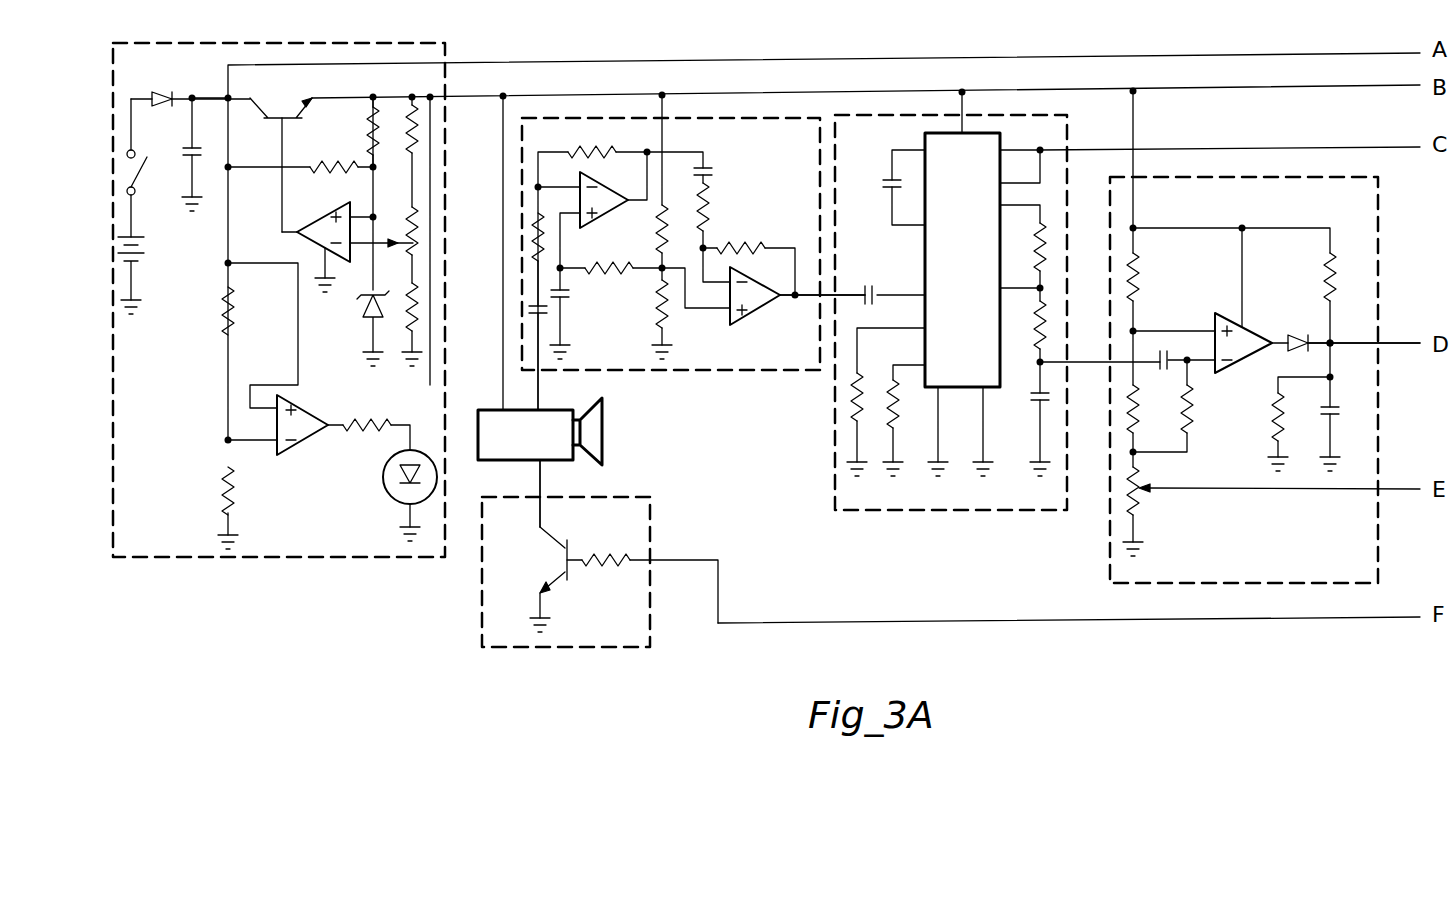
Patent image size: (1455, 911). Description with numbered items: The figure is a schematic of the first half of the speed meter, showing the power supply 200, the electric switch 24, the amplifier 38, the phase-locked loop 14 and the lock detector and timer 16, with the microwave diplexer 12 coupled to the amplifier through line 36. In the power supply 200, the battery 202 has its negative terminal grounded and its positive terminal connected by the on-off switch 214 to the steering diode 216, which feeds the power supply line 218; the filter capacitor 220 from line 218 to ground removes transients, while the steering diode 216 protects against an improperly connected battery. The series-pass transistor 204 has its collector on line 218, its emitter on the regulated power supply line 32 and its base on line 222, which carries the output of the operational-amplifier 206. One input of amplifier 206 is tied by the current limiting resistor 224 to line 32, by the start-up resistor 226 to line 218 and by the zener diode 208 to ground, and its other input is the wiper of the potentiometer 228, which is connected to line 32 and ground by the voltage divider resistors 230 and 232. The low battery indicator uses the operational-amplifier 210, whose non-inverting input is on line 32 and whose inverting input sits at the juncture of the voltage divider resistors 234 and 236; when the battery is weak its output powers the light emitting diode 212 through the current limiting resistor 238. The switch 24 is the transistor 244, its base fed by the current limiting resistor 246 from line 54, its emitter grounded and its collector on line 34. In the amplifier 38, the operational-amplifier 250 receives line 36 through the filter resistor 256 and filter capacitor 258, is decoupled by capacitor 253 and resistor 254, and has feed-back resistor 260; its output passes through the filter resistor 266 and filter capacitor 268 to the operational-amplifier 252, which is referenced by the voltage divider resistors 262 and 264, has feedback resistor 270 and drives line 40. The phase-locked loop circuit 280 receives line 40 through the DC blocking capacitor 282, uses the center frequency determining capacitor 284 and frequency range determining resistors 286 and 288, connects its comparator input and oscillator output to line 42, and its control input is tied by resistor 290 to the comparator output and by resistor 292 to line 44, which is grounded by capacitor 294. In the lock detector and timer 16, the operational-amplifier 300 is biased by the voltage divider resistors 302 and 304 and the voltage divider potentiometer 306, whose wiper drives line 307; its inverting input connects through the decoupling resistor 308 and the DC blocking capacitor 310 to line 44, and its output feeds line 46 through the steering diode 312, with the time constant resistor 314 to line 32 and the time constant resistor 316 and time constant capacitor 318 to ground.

The microwave diplexer 12 is at (602, 428).
The phase-locked loop 14 is at (975, 510).
The lock detector and timer 16 is at (1109, 542).
The electric switch 24 is at (652, 592).
The power supply line 32 is at (538, 96).
The line 34 is at (538, 477).
The line 36 is at (542, 387).
The amplifier 38 is at (640, 370).
The line 40 is at (795, 300).
The line 42 is at (1210, 150).
The line 44 is at (1098, 350).
The line 46 is at (1352, 340).
The line 54 is at (818, 620).
The power supply 200 is at (255, 558).
The battery 202 is at (144, 254).
The series-pass transistor 204 is at (272, 114).
The operational-amplifier 206 is at (332, 214).
The zener diode 208 is at (367, 316).
The operational-amplifier 210 is at (318, 440).
The light emitting diode 212 is at (382, 485).
The on-off switch 214 is at (152, 165).
The steering diode 216 is at (155, 94).
The power supply line 218 is at (215, 97).
The filter capacitor 220 is at (187, 149).
The line 222 is at (282, 192).
The current limiting resistor 224 is at (371, 120).
The start-up resistor 226 is at (329, 165).
The potentiometer 228 is at (425, 243).
The voltage divider resistor 230 is at (425, 130).
The voltage divider resistor 232 is at (425, 297).
The voltage divider resistor 234 is at (222, 321).
The voltage divider resistor 236 is at (234, 486).
The current limiting resistor 238 is at (350, 426).
The transistor 244 is at (558, 560).
The current limiting resistor 246 is at (598, 554).
The operational-amplifier 250 is at (620, 190).
The operational-amplifier 252 is at (770, 285).
The decoupling capacitor 253 is at (570, 296).
The decoupling resistor 254 is at (612, 264).
The filter resistor 256 is at (514, 225).
The filter capacitor 258 is at (514, 319).
The feed-back resistor 260 is at (616, 147).
The voltage divider resistor 262 is at (655, 236).
The voltage divider resistor 264 is at (652, 318).
The filter resistor 266 is at (712, 205).
The filter capacitor 268 is at (712, 175).
The feedback resistor 270 is at (752, 242).
The phase-locked loop circuit 280 is at (966, 258).
The DC blocking capacitor 282 is at (870, 287).
The center frequency determining capacitor 284 is at (882, 182).
The frequency range determining resistor 286 is at (844, 397).
The frequency range determining resistor 288 is at (888, 372).
The resistor 290 is at (1036, 240).
The resistor 292 is at (1044, 355).
The capacitor 294 is at (1034, 405).
The operational-amplifier 300 is at (1207, 313).
The voltage divider resistor 302 is at (1157, 271).
The voltage divider resistor 304 is at (1140, 410).
The voltage divider potentiometer 306 is at (1140, 505).
The line 307 is at (1230, 492).
The decoupling resistor 308 is at (1195, 412).
The DC blocking capacitor 310 is at (1160, 356).
The steering diode 312 is at (1292, 338).
The time constant resistor 314 is at (1322, 274).
The time constant resistor 316 is at (1276, 432).
The time constant capacitor 318 is at (1320, 409).